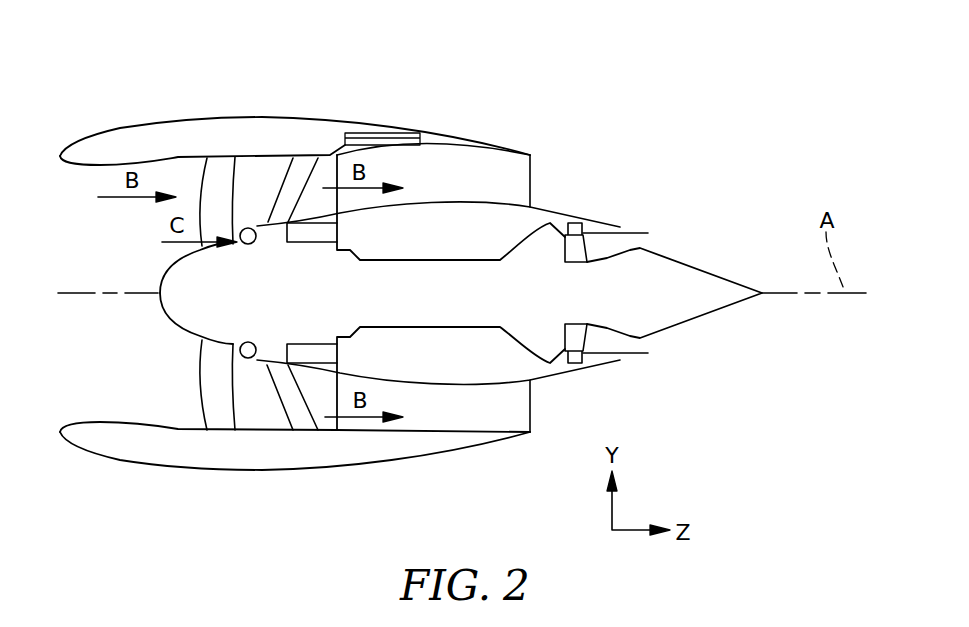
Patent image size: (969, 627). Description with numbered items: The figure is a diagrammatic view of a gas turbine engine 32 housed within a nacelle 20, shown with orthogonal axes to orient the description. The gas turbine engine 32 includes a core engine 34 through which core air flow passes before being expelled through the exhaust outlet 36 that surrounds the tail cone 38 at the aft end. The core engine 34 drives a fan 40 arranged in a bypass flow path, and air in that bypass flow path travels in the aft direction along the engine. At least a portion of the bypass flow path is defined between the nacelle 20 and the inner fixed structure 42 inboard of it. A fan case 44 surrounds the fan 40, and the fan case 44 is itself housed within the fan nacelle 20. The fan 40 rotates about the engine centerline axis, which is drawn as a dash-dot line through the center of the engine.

The nacelle 20 is at (197, 115).
The gas turbine engine 32 is at (535, 90).
The core engine 34 is at (435, 250).
The exhaust outlet 36 is at (645, 240).
The tail cone 38 is at (688, 312).
The fan 40 is at (207, 366).
The inner fixed structure 42 is at (476, 194).
The fan case 44 is at (195, 432).